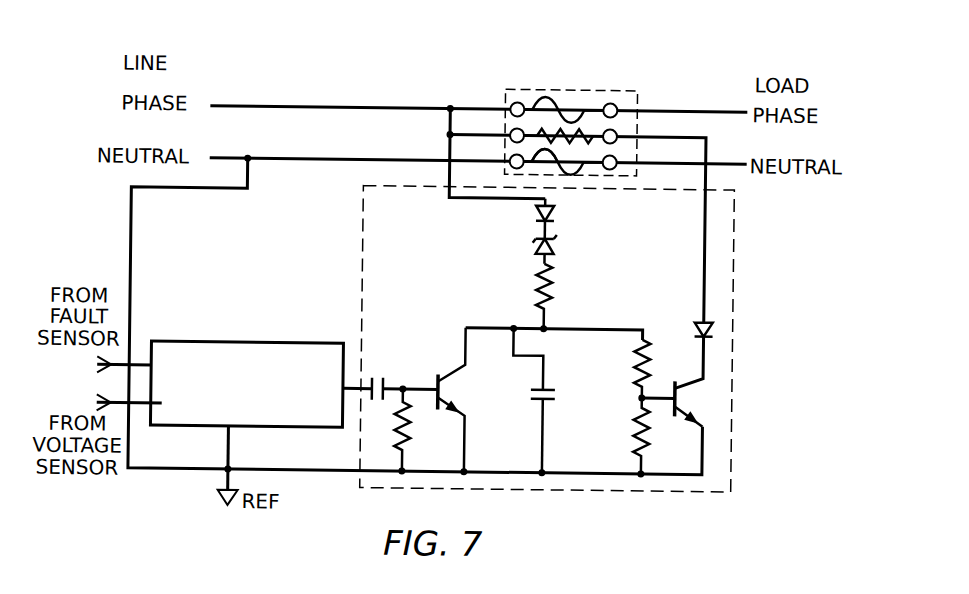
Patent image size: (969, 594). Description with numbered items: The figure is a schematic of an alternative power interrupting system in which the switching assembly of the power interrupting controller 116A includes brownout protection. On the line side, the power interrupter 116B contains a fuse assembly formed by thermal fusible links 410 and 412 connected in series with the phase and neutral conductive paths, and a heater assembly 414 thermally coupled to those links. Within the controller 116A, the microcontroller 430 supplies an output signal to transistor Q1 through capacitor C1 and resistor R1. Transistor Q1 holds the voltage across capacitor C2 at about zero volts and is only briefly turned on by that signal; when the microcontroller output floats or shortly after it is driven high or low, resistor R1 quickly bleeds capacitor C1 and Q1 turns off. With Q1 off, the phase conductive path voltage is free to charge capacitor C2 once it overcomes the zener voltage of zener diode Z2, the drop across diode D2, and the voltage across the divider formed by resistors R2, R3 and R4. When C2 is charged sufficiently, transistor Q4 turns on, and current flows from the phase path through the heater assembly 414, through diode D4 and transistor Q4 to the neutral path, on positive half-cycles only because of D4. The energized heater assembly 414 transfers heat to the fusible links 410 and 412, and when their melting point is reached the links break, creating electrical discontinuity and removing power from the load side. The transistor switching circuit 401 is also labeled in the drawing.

The power interrupting controller 116A is at (735, 236).
The power interrupter 116B is at (503, 91).
The thermal fusible link 410 is at (578, 121).
The thermal fusible link 412 is at (562, 164).
The heater assembly 414 is at (585, 131).
The microcontroller 430 is at (208, 345).
The transistor switch circuit 401 is at (718, 408).
The diode D2 is at (556, 216).
The zener diode Z2 is at (556, 246).
The resistor R2 is at (540, 285).
The capacitor C1 is at (370, 381).
The resistor R1 is at (399, 441).
The transistor Q1 is at (458, 366).
The capacitor C2 is at (537, 388).
The resistor R3 is at (634, 368).
The resistor R4 is at (633, 432).
The diode D4 is at (696, 330).
The transistor Q4 is at (686, 410).